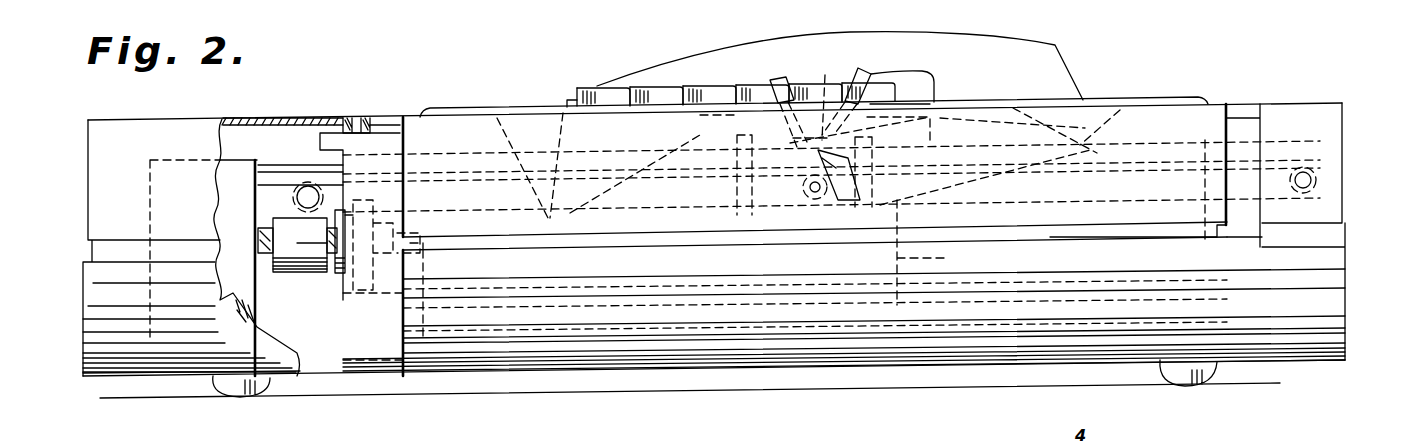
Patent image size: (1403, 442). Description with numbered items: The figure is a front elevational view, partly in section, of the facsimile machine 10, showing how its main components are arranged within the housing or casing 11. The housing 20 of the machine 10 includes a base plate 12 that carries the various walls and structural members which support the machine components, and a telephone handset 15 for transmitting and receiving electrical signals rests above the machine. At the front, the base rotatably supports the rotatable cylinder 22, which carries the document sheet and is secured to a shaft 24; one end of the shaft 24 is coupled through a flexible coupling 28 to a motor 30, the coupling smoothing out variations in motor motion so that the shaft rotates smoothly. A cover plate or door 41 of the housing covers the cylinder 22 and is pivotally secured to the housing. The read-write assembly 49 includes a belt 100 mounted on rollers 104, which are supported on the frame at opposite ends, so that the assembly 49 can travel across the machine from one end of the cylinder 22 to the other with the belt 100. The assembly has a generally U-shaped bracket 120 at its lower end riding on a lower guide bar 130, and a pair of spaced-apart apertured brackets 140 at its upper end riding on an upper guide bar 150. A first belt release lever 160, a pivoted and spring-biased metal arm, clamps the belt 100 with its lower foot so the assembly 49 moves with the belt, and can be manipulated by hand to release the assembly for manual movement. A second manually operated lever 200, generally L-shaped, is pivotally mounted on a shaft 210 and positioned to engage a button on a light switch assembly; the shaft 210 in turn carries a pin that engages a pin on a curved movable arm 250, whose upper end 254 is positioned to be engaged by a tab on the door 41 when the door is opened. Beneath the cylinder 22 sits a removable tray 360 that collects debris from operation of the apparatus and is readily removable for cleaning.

The facsimile machine 10 is at (409, 88).
The housing or casing 11 is at (86, 162).
The base plate 12 is at (367, 370).
The telephone handset 15 is at (1053, 48).
The housing 20 is at (1173, 97).
The rotatable cylinder 22 is at (473, 330).
The shaft 24 is at (392, 277).
The flexible coupling 28 is at (330, 268).
The motor 30 is at (258, 318).
The cover plate or door 41 is at (483, 125).
The read-write assembly 49 is at (877, 187).
The belt 100 is at (463, 212).
The rollers 104 is at (290, 164).
The U-shaped bracket 120 is at (940, 252).
The lower guide bar 130 is at (593, 287).
The apertured brackets 140 is at (703, 122).
The upper guide bar 150 is at (605, 147).
The first belt release lever 160 is at (868, 72).
The second manually operated lever 200 is at (780, 80).
The shaft 210 is at (810, 197).
The movable arm 250 is at (842, 205).
The upper end 254 is at (824, 98).
The removable tray 360 is at (620, 340).